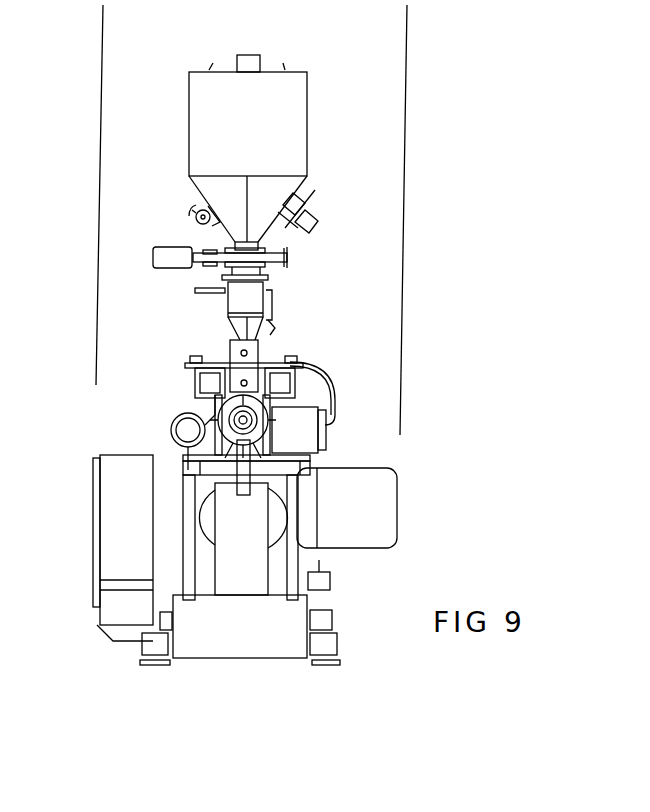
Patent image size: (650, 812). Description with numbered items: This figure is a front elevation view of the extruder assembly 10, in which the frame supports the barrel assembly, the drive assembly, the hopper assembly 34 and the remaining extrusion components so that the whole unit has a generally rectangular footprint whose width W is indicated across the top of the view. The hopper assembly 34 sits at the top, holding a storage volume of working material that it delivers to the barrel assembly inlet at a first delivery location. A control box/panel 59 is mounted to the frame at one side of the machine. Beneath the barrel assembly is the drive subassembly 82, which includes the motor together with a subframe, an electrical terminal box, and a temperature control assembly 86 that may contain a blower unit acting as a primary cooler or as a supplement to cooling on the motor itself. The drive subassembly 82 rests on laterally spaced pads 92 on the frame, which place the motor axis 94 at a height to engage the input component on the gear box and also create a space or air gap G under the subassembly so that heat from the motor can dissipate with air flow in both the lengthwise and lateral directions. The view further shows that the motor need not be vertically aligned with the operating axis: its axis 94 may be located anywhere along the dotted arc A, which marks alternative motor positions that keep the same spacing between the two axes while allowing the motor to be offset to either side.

The extruder assembly 10 is at (474, 346).
The hopper assembly 34 is at (323, 153).
The control box/panel 59 is at (92, 526).
The drive subassembly 82 is at (351, 455).
The temperature control assembly 86 is at (359, 528).
The pads 92 is at (193, 576).
The motor axis 94 is at (245, 523).
The arc A is at (327, 483).
The space/air gap G is at (278, 568).
The width W is at (105, 36).